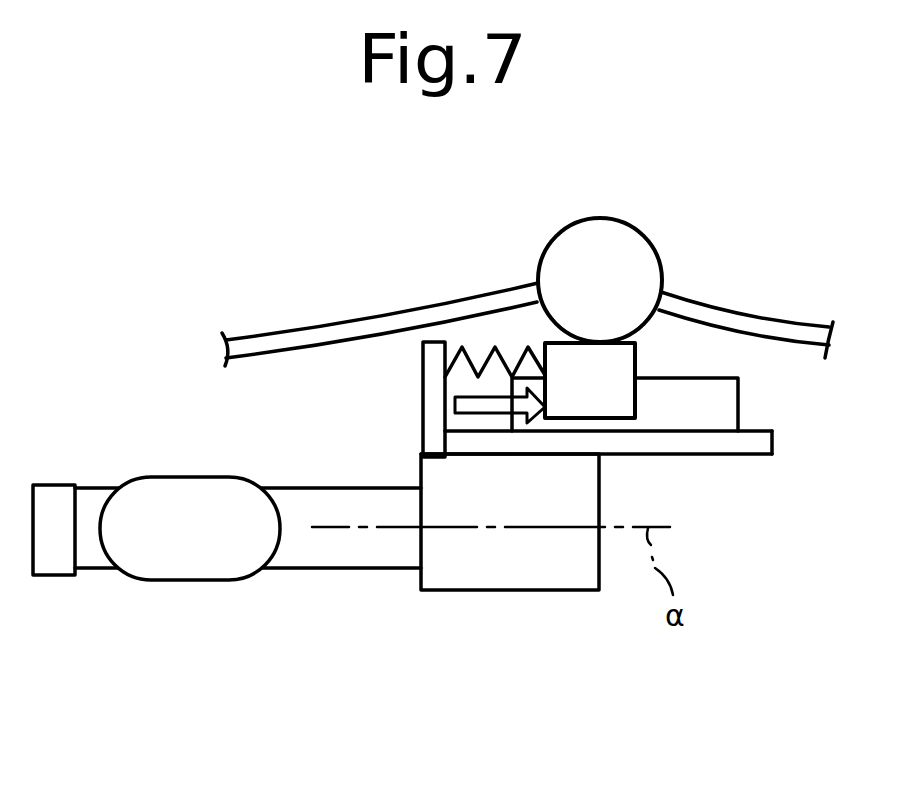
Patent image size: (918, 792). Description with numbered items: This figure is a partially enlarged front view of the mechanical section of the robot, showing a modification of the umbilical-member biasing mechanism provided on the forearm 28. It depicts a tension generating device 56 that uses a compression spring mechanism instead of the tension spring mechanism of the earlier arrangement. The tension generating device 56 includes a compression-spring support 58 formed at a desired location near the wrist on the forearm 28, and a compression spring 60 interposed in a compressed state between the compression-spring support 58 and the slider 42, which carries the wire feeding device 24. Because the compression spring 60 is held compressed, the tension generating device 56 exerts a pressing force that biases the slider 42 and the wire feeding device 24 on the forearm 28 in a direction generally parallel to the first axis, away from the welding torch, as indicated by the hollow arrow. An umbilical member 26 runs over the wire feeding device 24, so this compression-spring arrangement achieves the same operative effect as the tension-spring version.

The wire feeding device 24 is at (595, 237).
The sheet / belt 26 is at (268, 342).
The forearm 28 is at (503, 573).
The slider 42 is at (622, 368).
The tension generating device 56 is at (707, 356).
The compression-spring support 58 is at (432, 376).
The compression spring 60 is at (483, 357).